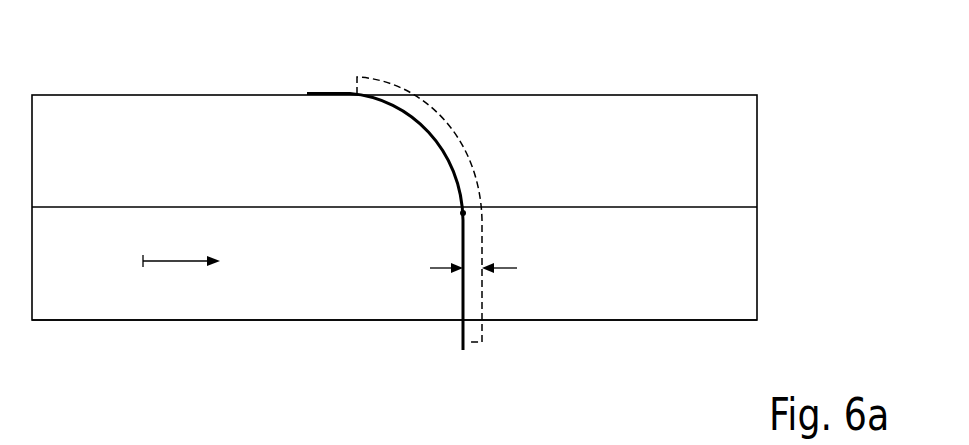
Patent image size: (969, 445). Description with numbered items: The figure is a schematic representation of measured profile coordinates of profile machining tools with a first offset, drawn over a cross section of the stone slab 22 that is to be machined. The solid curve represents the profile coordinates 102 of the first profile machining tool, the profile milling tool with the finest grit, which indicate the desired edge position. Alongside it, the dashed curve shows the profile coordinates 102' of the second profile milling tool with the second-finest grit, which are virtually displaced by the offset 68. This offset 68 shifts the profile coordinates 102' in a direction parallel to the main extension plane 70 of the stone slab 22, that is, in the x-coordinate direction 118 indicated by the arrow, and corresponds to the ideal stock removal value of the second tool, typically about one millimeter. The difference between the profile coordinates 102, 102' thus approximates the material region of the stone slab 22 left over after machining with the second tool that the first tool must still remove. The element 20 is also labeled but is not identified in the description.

The wind turbine blade / body 20 is at (760, 158).
The stone slab 22 is at (602, 137).
The main extension plane 70 is at (688, 207).
The profile coordinates 102 is at (284, 182).
The profile coordinates 102' is at (419, 175).
The offset 68 is at (472, 272).
The x-coordinate direction 118 is at (177, 262).